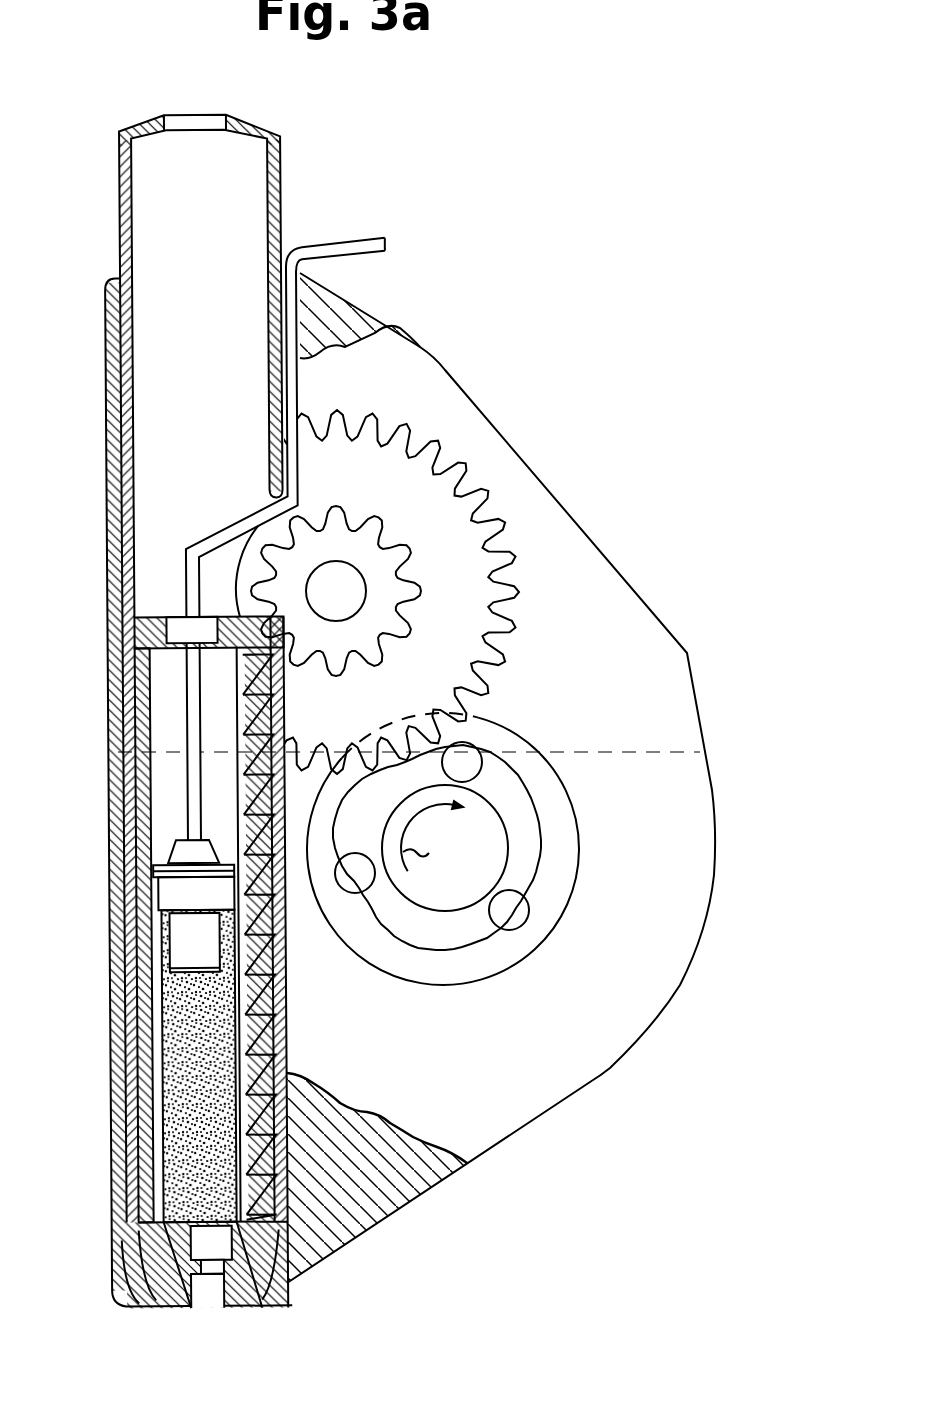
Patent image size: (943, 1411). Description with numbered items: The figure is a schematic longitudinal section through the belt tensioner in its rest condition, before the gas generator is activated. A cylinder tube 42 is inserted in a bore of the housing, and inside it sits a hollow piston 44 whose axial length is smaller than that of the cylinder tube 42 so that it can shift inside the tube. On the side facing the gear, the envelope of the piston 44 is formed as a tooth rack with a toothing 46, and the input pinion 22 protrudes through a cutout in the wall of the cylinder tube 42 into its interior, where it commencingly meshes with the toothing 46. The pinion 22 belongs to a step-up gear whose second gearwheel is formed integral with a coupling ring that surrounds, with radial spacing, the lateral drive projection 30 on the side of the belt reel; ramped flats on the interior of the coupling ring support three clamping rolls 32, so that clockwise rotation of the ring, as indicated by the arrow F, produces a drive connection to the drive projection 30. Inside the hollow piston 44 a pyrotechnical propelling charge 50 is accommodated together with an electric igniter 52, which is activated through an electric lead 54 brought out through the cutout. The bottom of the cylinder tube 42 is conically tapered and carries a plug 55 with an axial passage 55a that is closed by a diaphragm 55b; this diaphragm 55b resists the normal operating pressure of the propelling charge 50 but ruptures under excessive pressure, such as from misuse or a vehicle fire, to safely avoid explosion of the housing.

The input pinion 22 is at (392, 539).
The drive projection 30 is at (487, 822).
The clamping rolls 32 is at (513, 915).
The cylinder tube 42 is at (124, 168).
The piston 44 is at (140, 738).
The toothing 46 is at (255, 1062).
The pyrotechnical propelling charge 50 is at (182, 1048).
The electric igniter 52 is at (170, 893).
The electric lead 54 is at (186, 567).
The plug 55 is at (165, 1233).
The axial passage 55a is at (193, 1297).
The diaphragm 55b is at (215, 1265).